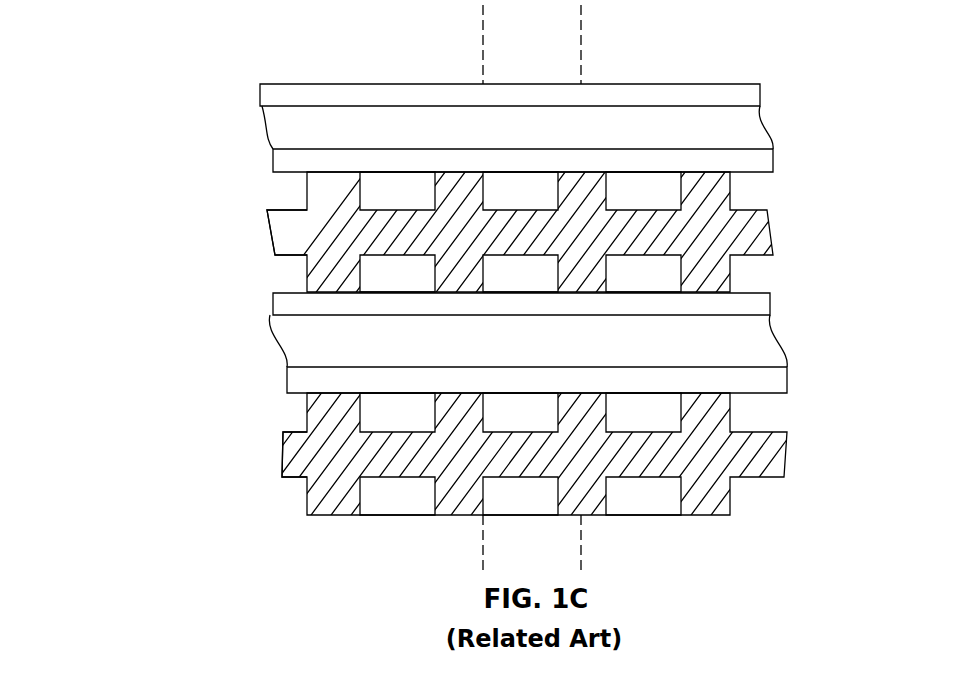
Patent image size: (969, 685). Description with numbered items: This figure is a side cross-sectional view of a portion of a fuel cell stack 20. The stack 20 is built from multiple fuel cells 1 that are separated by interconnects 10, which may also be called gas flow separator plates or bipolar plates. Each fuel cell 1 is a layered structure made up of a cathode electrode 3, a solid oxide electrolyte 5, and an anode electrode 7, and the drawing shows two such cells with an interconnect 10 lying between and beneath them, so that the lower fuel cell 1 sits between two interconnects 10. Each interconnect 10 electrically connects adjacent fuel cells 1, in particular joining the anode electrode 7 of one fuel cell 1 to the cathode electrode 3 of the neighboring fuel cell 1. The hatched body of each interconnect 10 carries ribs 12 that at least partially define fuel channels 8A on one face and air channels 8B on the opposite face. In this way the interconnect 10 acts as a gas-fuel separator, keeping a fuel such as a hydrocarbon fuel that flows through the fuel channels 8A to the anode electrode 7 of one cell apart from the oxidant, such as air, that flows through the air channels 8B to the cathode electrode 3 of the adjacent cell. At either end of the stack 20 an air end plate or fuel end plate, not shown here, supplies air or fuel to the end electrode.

The fuel cell 1 is at (792, 84).
The cathode electrode 3 is at (260, 94).
The solid oxide electrolyte 5 is at (262, 128).
The anode electrode 7 is at (273, 163).
The fuel channel 8A is at (381, 206).
The air channel 8B is at (381, 288).
The interconnect 10 is at (792, 190).
The rib 12 is at (307, 197).
The stack 20 is at (136, 184).